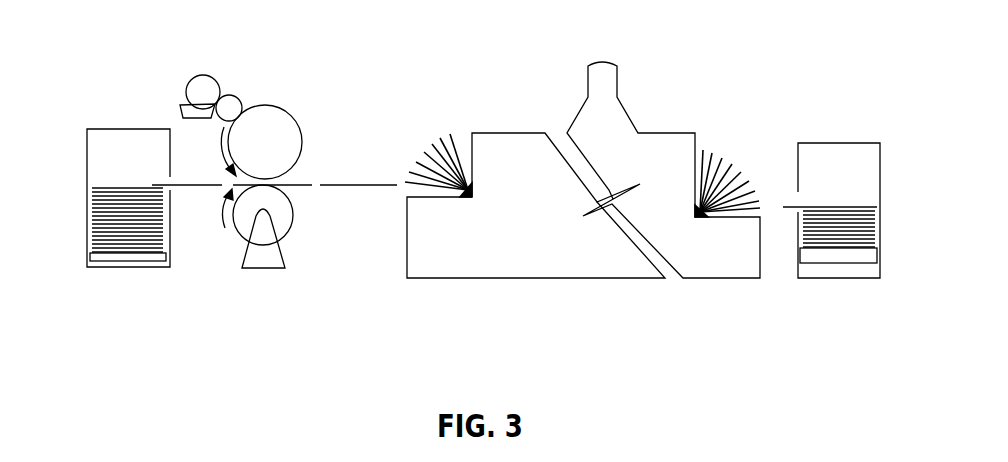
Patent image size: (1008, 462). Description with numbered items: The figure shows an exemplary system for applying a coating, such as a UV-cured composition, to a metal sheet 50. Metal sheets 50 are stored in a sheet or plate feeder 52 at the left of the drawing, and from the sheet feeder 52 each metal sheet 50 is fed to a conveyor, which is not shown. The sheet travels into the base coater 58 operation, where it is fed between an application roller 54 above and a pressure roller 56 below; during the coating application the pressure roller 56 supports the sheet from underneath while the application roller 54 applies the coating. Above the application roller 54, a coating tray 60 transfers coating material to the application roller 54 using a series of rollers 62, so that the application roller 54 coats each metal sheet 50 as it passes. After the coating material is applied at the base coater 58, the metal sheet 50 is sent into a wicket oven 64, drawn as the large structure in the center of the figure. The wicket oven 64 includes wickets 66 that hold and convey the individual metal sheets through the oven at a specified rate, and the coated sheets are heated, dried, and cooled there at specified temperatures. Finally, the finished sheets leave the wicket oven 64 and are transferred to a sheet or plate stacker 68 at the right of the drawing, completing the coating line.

The metal sheet 50 is at (208, 187).
The sheet or plate feeder 52 is at (128, 267).
The application roller 54 is at (268, 123).
The pressure roller 56 is at (278, 222).
The base coater 58 is at (267, 268).
The coating tray 60 is at (176, 109).
The series of rollers 62 is at (229, 77).
The wicket oven 64 is at (510, 278).
The wickets 66 is at (459, 130).
The sheet or plate stacker 68 is at (838, 278).